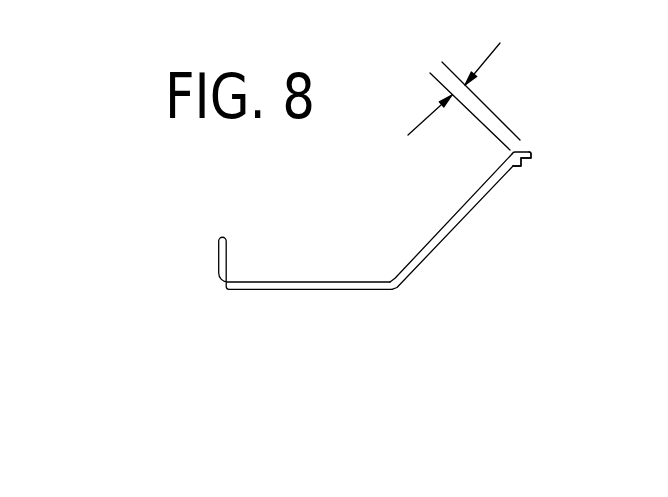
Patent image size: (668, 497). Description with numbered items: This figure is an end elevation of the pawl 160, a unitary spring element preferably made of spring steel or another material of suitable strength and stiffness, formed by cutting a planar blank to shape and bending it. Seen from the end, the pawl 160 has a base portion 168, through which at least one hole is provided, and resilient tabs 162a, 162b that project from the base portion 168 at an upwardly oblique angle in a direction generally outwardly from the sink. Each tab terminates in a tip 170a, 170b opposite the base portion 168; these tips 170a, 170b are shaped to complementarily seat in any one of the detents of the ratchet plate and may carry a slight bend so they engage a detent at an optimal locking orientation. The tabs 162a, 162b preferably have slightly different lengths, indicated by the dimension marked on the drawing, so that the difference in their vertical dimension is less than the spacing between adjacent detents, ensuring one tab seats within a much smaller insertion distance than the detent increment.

The pawl 160 is at (258, 197).
The resilient tab 162a is at (447, 235).
The resilient tab 162b is at (528, 147).
The base portion 168 is at (297, 290).
The tip 170a is at (516, 168).
The tip 170b is at (532, 152).